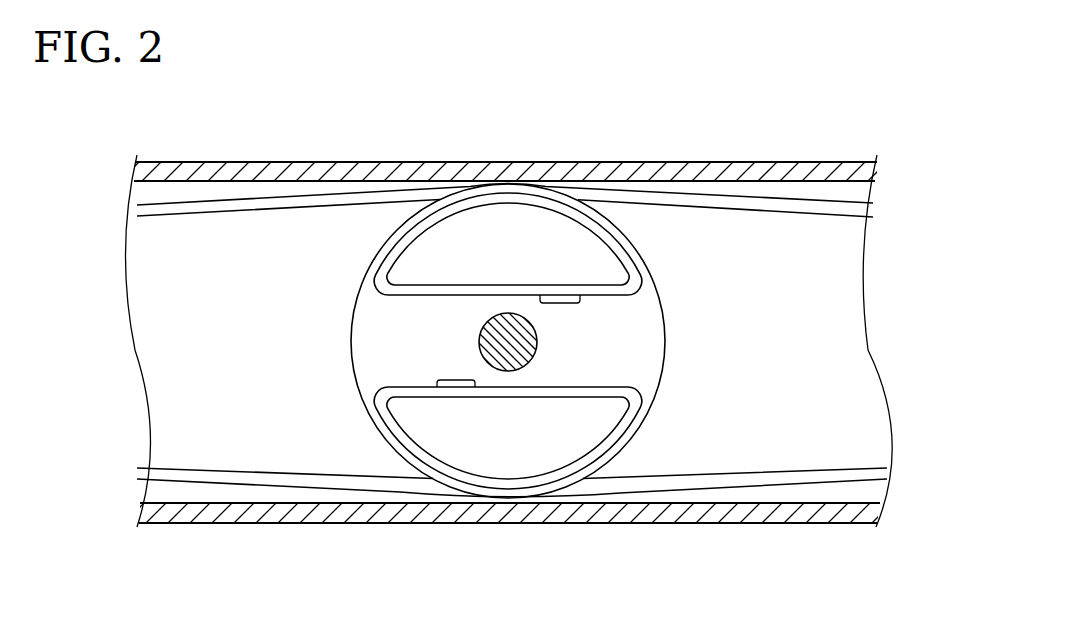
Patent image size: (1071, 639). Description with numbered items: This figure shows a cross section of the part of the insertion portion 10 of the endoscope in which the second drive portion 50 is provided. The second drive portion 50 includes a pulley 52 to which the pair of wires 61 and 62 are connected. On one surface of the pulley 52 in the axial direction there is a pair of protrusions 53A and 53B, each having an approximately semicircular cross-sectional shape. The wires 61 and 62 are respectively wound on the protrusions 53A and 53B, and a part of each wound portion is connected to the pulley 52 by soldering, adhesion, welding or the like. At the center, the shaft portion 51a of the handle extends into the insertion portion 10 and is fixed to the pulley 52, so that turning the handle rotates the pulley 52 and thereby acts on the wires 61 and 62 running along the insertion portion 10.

The insertion portion 10 is at (783, 168).
The second drive portion 50 is at (685, 237).
The shaft portion 51a is at (497, 340).
The pulley 52 is at (636, 334).
The protrusion 53A is at (505, 238).
The protrusion 53B is at (503, 447).
The wire 61 is at (222, 205).
The wire 62 is at (246, 478).